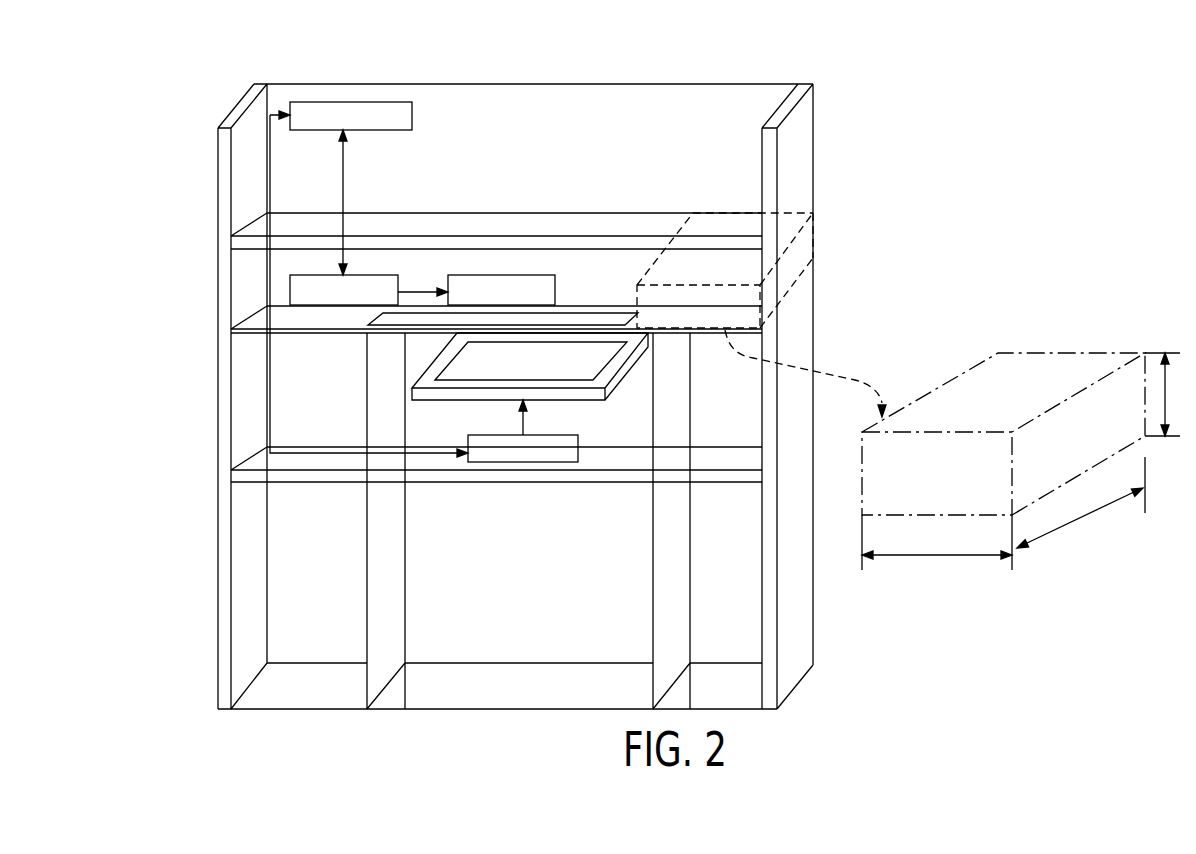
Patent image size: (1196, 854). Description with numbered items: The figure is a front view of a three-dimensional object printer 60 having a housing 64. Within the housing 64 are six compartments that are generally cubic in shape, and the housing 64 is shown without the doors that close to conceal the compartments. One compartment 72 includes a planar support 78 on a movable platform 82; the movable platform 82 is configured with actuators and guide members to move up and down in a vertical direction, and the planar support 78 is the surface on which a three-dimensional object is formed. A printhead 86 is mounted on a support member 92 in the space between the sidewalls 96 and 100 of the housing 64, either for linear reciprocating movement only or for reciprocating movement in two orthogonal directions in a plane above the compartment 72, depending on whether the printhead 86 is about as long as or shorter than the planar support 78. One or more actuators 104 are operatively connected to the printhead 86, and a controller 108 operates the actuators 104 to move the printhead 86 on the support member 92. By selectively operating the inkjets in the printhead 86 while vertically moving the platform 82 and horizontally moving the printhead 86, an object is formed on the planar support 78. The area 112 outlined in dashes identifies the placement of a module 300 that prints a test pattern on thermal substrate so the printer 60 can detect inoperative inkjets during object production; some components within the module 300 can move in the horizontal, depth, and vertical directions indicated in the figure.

The printer 60 is at (272, 70).
The sidewall 96 is at (218, 203).
The sidewall 100 is at (813, 105).
The housing 64 is at (797, 325).
The support member 92 is at (305, 330).
The compartment 72 is at (432, 434).
The controller 108 is at (412, 118).
The actuators 104 is at (398, 282).
The printhead 86 is at (555, 290).
The movable platform 82 is at (547, 370).
The planar support 78 is at (545, 373).
The area 112 is at (815, 242).
The module 300 is at (1020, 350).